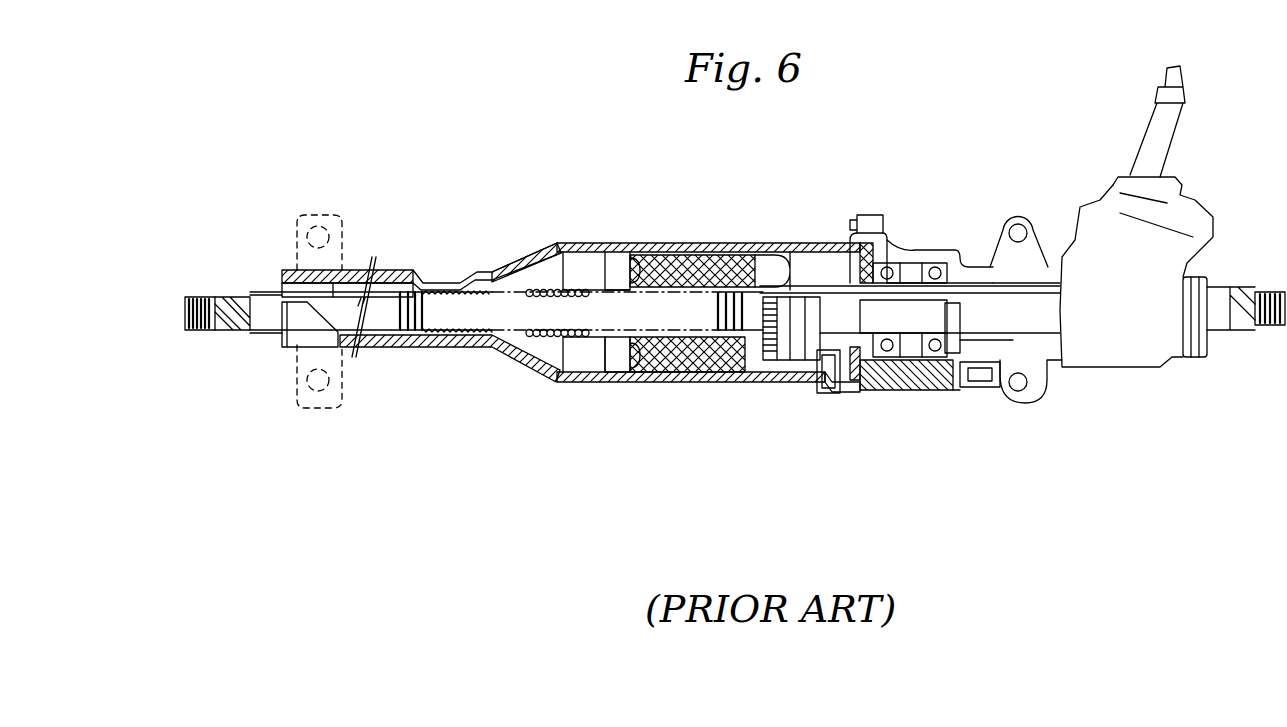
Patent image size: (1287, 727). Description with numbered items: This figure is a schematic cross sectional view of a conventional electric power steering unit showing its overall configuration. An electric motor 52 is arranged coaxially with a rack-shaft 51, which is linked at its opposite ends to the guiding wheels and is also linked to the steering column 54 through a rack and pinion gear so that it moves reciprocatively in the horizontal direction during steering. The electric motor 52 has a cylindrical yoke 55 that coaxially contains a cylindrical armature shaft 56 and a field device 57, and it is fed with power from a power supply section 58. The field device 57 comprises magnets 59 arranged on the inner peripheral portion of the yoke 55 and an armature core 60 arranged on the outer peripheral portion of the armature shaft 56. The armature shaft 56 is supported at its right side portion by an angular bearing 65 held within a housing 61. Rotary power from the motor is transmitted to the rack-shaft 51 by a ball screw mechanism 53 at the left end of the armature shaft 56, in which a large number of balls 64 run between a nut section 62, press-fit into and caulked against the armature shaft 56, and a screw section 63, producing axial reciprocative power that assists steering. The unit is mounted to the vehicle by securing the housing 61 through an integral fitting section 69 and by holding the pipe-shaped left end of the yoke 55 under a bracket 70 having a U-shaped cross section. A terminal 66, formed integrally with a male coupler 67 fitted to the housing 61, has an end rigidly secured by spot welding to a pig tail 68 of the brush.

The rack-shaft 51 is at (567, 312).
The electric motor 52 is at (710, 242).
The ball screw mechanism 53 is at (520, 338).
The steering column 54 is at (1148, 120).
The cylindrical yoke 55 is at (567, 241).
The cylindrical armature shaft 56 is at (650, 352).
The field device 57 is at (627, 372).
The power supply section 58 is at (893, 395).
The magnets 59 is at (632, 252).
The armature core 60 is at (695, 385).
The housing 61 is at (915, 258).
The nut section 62 is at (513, 262).
The screw section 63 is at (455, 338).
The balls 64 is at (535, 340).
The angular bearing 65 is at (888, 260).
The terminal 66 is at (835, 380).
The coupler 67 is at (985, 393).
The pig tail 68 is at (808, 392).
The fitting section 69 is at (1025, 213).
The bracket 70 is at (297, 407).